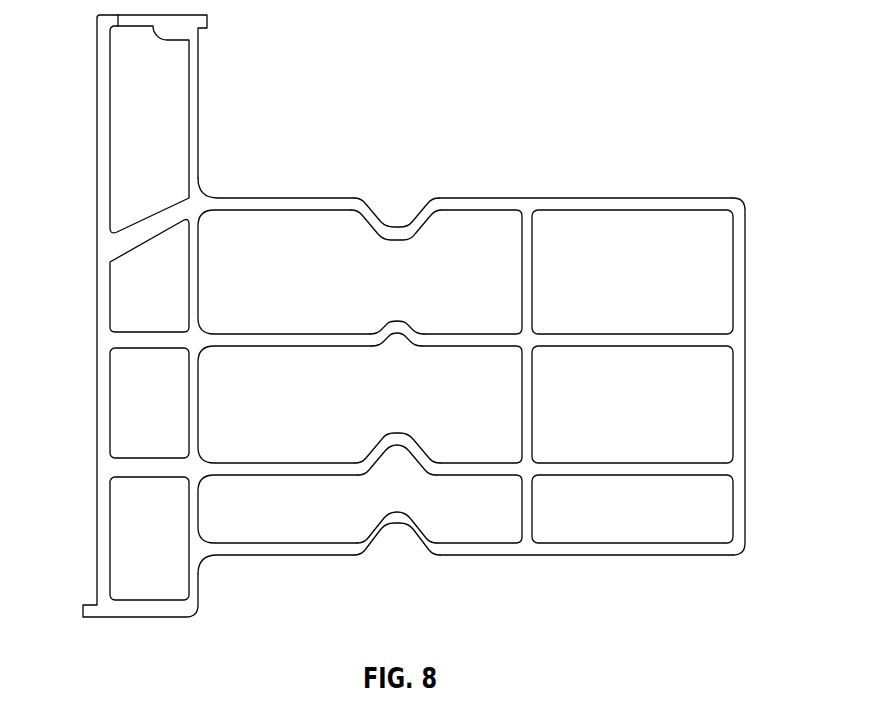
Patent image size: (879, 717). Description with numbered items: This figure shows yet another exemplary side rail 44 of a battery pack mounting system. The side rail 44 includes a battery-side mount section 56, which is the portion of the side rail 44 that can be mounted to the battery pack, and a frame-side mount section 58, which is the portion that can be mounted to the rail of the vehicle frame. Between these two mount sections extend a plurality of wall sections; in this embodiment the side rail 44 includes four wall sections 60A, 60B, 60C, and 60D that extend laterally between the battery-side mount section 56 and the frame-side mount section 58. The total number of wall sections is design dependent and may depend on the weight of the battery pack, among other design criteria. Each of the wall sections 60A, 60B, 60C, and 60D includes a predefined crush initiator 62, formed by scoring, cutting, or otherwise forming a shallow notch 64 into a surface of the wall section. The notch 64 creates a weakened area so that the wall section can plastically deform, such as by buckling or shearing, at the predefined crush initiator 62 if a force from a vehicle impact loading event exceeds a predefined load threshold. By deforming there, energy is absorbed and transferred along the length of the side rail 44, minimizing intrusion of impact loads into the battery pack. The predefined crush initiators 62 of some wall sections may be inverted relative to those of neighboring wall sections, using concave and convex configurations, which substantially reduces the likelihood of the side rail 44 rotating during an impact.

The side rail 44 is at (421, 134).
The battery-side mount section 56 is at (93, 207).
The frame-side mount section 58 is at (749, 346).
The wall section 60A is at (262, 198).
The wall section 60B is at (236, 346).
The wall section 60C is at (228, 475).
The wall section 60D is at (262, 555).
The predefined crush initiator 62 is at (389, 195).
The notch 64 is at (383, 222).